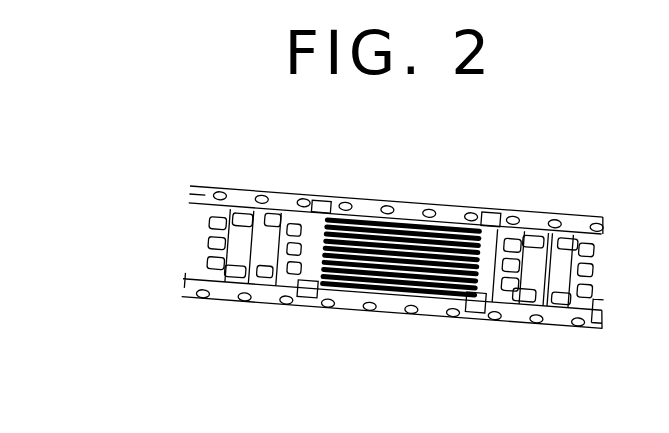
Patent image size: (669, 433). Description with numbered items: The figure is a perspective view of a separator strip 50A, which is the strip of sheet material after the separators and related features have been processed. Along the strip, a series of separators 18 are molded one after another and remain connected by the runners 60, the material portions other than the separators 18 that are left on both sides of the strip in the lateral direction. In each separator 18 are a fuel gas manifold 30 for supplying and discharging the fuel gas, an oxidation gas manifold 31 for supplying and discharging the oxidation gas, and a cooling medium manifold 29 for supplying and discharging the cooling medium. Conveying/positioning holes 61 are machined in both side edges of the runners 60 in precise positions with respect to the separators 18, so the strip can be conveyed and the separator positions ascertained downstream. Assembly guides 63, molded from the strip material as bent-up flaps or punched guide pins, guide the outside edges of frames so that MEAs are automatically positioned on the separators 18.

The separator 18 is at (208, 225).
The cooling medium manifold 29 is at (280, 290).
The fuel gas manifold 30 is at (288, 233).
The oxidation gas manifold 31 is at (293, 270).
The separator strip 50A is at (365, 198).
The runners 60 is at (247, 295).
The conveying/positioning holes 61 is at (473, 216).
The assembly guides 63 is at (310, 298).